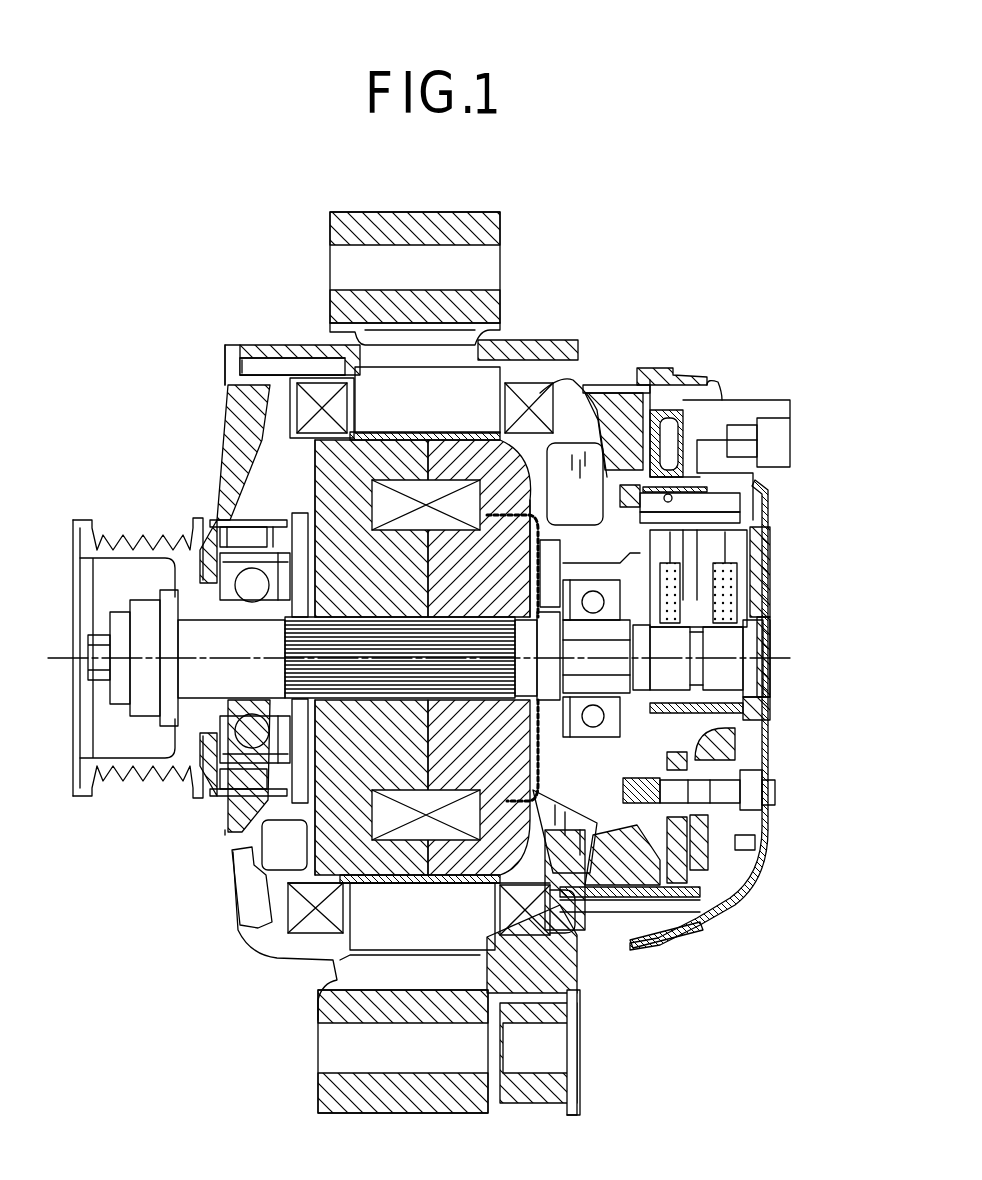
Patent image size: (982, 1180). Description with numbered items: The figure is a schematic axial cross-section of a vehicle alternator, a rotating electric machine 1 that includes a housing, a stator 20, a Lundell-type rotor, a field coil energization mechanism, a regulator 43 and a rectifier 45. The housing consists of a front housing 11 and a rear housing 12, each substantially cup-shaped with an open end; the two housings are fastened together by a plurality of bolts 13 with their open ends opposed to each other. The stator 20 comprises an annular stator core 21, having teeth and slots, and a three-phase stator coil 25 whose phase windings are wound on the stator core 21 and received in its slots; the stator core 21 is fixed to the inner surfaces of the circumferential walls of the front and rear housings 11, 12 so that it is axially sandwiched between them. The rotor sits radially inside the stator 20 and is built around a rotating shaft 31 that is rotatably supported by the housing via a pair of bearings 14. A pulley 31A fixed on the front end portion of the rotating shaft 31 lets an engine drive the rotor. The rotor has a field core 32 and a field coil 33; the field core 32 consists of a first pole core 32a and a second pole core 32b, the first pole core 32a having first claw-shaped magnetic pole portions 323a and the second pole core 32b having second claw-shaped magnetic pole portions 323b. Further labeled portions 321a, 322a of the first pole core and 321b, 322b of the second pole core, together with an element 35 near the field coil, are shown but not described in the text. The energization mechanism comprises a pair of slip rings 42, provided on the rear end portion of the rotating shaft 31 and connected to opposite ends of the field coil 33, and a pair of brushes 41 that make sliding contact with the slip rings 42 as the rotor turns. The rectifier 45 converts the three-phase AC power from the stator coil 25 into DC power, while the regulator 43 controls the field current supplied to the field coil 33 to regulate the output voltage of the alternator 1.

The rotating electric machine 1 is at (752, 235).
The front housing 11 is at (345, 1010).
The rear housing 12 is at (530, 970).
The bolts 13 is at (320, 372).
The bearings 14 is at (250, 728).
The stator 20 is at (322, 390).
The stator core 21 is at (480, 378).
The stator coil 25 is at (262, 362).
The rotating shaft 31 is at (208, 683).
The pulley 31A is at (100, 770).
The field core 32 is at (135, 930).
The first pole core 32a is at (345, 803).
The second pole core 32b is at (347, 913).
The field coil 33 is at (565, 895).
The insulating bobbin 35 is at (428, 432).
The brushes 41 is at (720, 605).
The slip rings 42 is at (715, 680).
The regulator 43 is at (690, 420).
The rectifier 45 is at (722, 853).
The front boss portion 321a is at (392, 568).
The rear boss portion 321b is at (462, 470).
The front disk portion 322a is at (388, 465).
The rear disk portion 322b is at (500, 477).
The first claw-shaped magnetic pole portions 323a is at (372, 422).
The second claw-shaped magnetic pole portions 323b is at (548, 420).